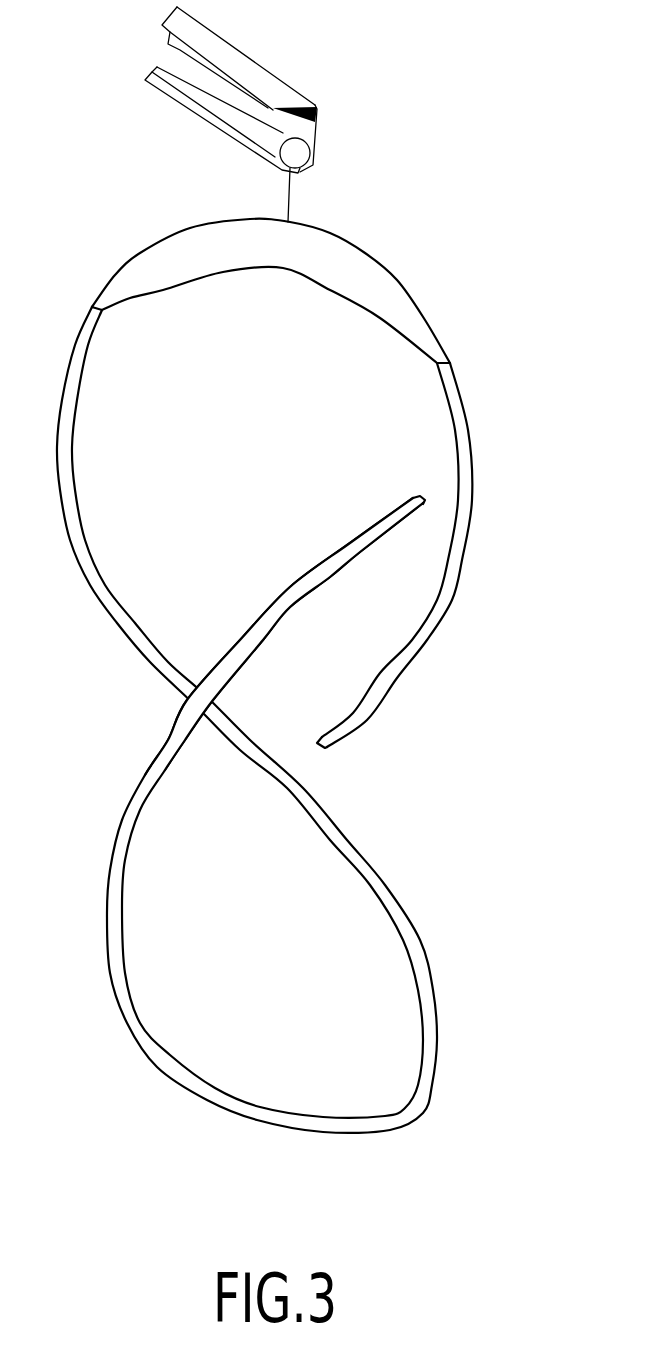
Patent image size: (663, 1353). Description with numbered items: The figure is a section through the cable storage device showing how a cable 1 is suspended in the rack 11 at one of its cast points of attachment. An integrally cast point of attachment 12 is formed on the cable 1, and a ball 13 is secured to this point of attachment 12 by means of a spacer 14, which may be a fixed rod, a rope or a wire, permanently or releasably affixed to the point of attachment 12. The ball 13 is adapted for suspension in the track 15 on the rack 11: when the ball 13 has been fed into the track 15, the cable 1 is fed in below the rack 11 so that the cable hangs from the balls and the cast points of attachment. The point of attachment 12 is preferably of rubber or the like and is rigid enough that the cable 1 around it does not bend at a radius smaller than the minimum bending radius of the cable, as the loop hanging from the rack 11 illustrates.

The cable 1 is at (462, 411).
The rack 11 is at (270, 82).
The point of attachment 12 is at (397, 283).
The ball 13 is at (310, 142).
The spacer 14 is at (289, 199).
The track 15 is at (240, 148).